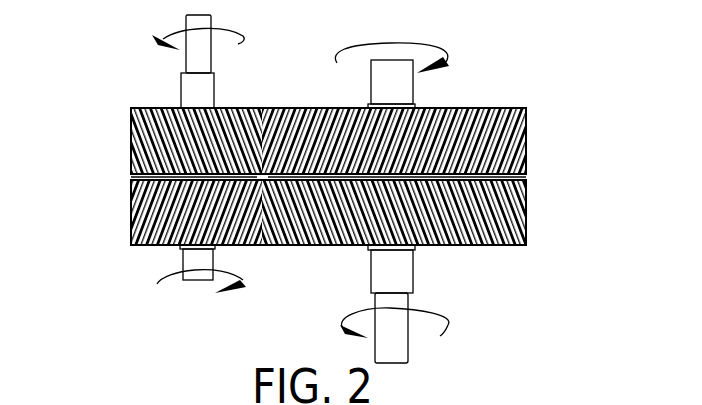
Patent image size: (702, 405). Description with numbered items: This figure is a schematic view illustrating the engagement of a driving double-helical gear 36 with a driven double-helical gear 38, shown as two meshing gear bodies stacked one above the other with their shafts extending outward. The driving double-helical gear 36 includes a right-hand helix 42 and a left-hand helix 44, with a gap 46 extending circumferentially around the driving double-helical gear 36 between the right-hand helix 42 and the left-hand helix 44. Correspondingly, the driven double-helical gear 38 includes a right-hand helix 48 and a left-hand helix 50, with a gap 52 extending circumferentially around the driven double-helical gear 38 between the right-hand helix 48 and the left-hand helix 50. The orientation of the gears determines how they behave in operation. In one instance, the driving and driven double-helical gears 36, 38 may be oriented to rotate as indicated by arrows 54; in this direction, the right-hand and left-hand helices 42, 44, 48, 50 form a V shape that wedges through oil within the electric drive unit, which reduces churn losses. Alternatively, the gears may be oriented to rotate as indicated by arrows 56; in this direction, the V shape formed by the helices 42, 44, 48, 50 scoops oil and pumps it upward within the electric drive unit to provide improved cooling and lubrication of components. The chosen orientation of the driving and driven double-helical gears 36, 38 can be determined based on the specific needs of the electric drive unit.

The driving double-helical gear 36 is at (483, 246).
The driven double-helical gear 38 is at (150, 246).
The right-hand helix 42 is at (492, 209).
The left-hand helix 44 is at (492, 143).
The gap 46 is at (513, 177).
The right-hand helix 48 is at (160, 142).
The left-hand helix 50 is at (158, 212).
The gap 52 is at (140, 177).
The arrows 54 is at (157, 284).
The arrows 56 is at (154, 38).